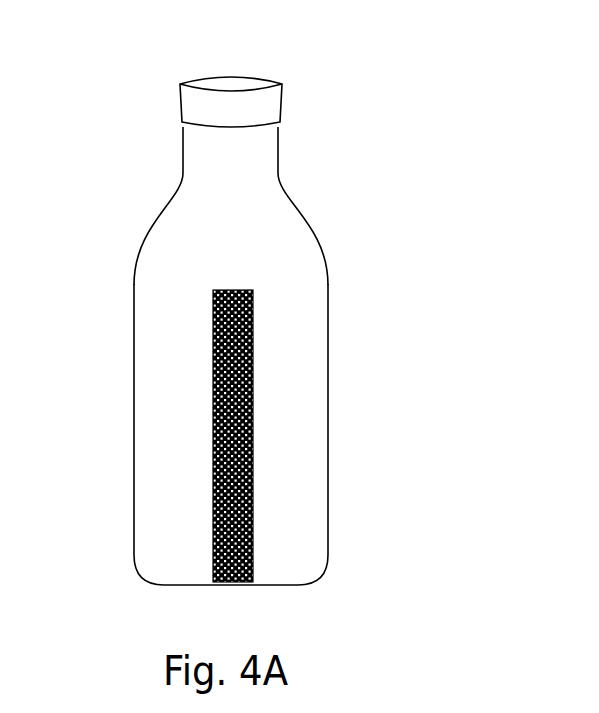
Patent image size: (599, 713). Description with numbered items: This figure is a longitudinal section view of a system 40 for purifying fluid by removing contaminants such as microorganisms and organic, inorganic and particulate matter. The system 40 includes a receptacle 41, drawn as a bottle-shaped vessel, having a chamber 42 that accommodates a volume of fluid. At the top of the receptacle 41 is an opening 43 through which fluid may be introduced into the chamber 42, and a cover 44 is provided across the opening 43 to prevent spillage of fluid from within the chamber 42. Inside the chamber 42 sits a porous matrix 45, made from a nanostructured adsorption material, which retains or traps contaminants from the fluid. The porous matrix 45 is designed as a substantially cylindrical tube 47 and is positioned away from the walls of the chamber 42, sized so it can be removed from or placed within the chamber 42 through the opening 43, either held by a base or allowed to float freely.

The system 40 is at (432, 67).
The receptacle 41 is at (328, 423).
The chamber 42 is at (245, 252).
The opening 43 is at (195, 187).
The cover 44 is at (218, 79).
The porous matrix 45 is at (253, 357).
The substantially cylindrical tube 47 is at (212, 433).